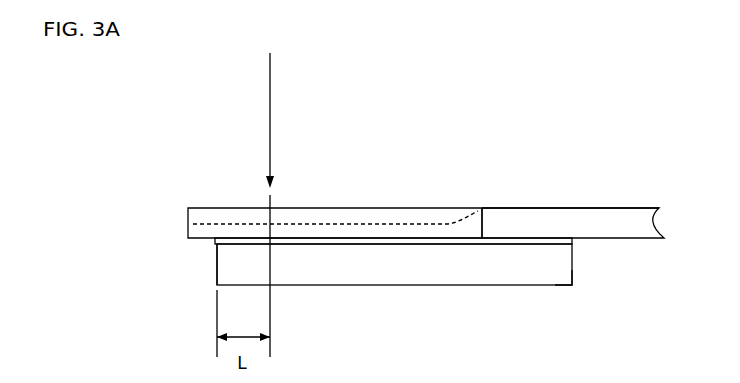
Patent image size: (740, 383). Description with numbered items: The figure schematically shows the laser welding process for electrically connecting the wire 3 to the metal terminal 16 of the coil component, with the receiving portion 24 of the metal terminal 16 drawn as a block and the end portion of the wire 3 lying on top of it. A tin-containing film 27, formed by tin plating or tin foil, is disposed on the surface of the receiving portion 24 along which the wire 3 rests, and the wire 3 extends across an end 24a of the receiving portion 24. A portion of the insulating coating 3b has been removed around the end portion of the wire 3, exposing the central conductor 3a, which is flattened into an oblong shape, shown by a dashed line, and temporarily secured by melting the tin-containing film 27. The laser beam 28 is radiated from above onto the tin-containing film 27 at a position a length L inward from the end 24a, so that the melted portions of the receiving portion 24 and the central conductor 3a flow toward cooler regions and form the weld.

The wire 3 is at (643, 210).
The central conductor 3a is at (367, 232).
The insulating coating 3b is at (522, 215).
The tin-containing film 27 is at (215, 242).
The receiving portion 24 is at (367, 280).
The end of receiving portion 24a is at (215, 262).
The metal terminal 16 is at (562, 287).
The laser beam 28 is at (272, 101).